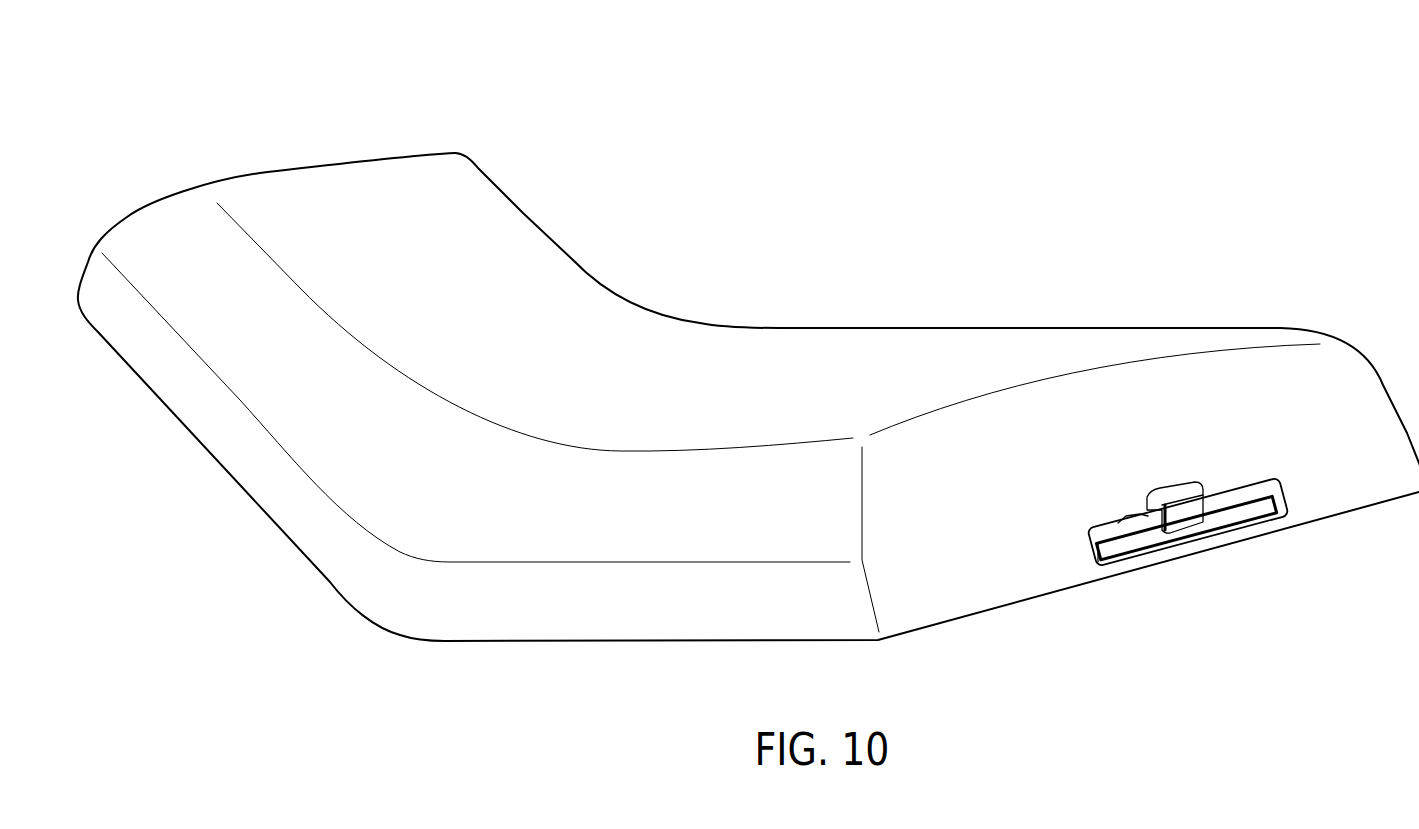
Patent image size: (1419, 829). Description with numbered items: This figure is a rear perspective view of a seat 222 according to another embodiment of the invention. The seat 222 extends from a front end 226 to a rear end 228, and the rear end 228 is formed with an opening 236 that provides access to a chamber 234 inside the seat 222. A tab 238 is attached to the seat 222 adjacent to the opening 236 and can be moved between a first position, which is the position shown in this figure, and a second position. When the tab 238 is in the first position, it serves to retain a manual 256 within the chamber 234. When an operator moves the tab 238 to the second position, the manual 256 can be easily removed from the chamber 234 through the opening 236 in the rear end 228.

The seat 222 is at (722, 250).
The front end 226 is at (191, 153).
The rear end 228 is at (1355, 303).
The chamber 234 is at (1249, 482).
The opening 236 is at (1286, 488).
The tab 238 is at (1177, 515).
The manual 256 is at (1103, 532).